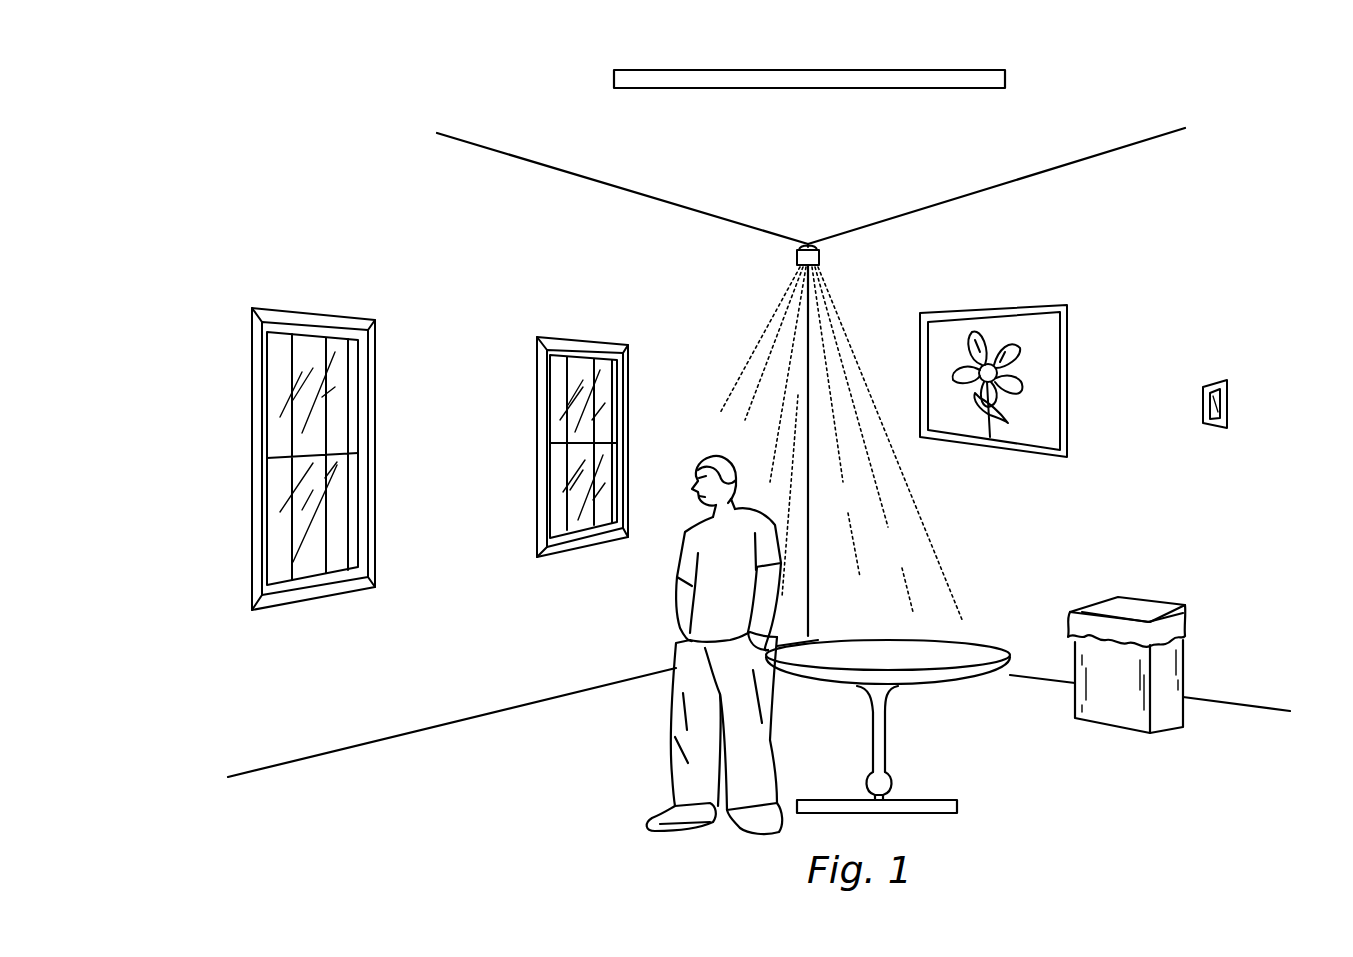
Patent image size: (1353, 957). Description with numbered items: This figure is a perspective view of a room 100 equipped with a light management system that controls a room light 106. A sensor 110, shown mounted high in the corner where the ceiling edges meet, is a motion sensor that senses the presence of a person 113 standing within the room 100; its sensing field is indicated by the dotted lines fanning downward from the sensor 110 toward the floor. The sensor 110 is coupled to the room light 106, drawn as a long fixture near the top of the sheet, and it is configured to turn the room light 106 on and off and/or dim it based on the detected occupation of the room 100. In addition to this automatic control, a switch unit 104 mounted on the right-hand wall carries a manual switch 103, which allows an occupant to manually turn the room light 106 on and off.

The room 100 is at (326, 174).
The manual switch 103 is at (1206, 399).
The switch unit 104 is at (1228, 388).
The room light 106 is at (1006, 78).
The sensor 110 is at (820, 258).
The person 113 is at (675, 568).